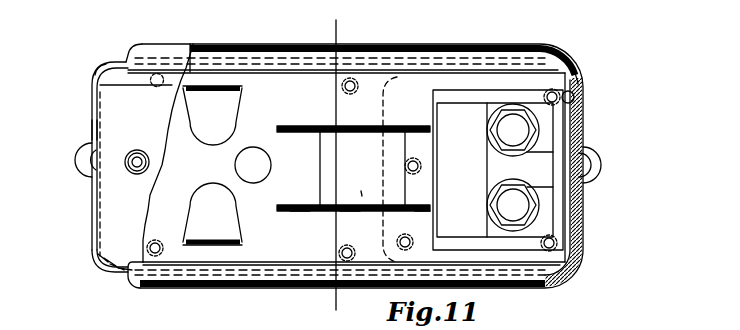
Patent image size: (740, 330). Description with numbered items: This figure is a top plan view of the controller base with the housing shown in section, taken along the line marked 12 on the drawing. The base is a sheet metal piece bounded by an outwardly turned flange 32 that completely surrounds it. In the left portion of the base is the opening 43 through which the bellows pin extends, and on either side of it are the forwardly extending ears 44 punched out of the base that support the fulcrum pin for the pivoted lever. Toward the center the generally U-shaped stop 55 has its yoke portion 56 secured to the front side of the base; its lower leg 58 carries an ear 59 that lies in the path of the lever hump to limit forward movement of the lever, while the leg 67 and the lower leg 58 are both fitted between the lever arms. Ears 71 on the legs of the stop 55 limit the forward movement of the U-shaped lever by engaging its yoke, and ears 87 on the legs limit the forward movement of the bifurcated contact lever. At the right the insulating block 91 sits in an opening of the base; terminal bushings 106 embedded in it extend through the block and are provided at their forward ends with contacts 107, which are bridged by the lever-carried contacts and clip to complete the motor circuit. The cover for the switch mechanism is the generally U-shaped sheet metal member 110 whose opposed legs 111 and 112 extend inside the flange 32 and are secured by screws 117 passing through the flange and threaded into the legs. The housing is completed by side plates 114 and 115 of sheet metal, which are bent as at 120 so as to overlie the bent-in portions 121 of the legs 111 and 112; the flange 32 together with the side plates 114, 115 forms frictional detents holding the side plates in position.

The section line 12- 12 is at (358, 23).
The outwardly turned flange 32 is at (584, 214).
The opening 43 is at (236, 166).
The forwardly extending ears 44 is at (237, 87).
The U-shaped stop 55 is at (318, 174).
The yoke portion 56 is at (363, 184).
The lower leg 58 is at (348, 212).
The ear 59 is at (284, 211).
The leg 67 is at (328, 113).
The ears 71 is at (296, 212).
The ears 87 is at (422, 212).
The insulating block 91 is at (436, 110).
The terminal bushings 106 is at (489, 142).
The contacts 107 is at (492, 129).
The U-shaped sheet metal member 110 is at (117, 228).
The leg 111 is at (97, 128).
The leg 112 is at (582, 127).
The side plate 114 is at (189, 44).
The side plate 115 is at (207, 286).
The screws 117 is at (78, 168).
The bent portion 120 is at (112, 64).
The bent-in portions 121 is at (113, 70).